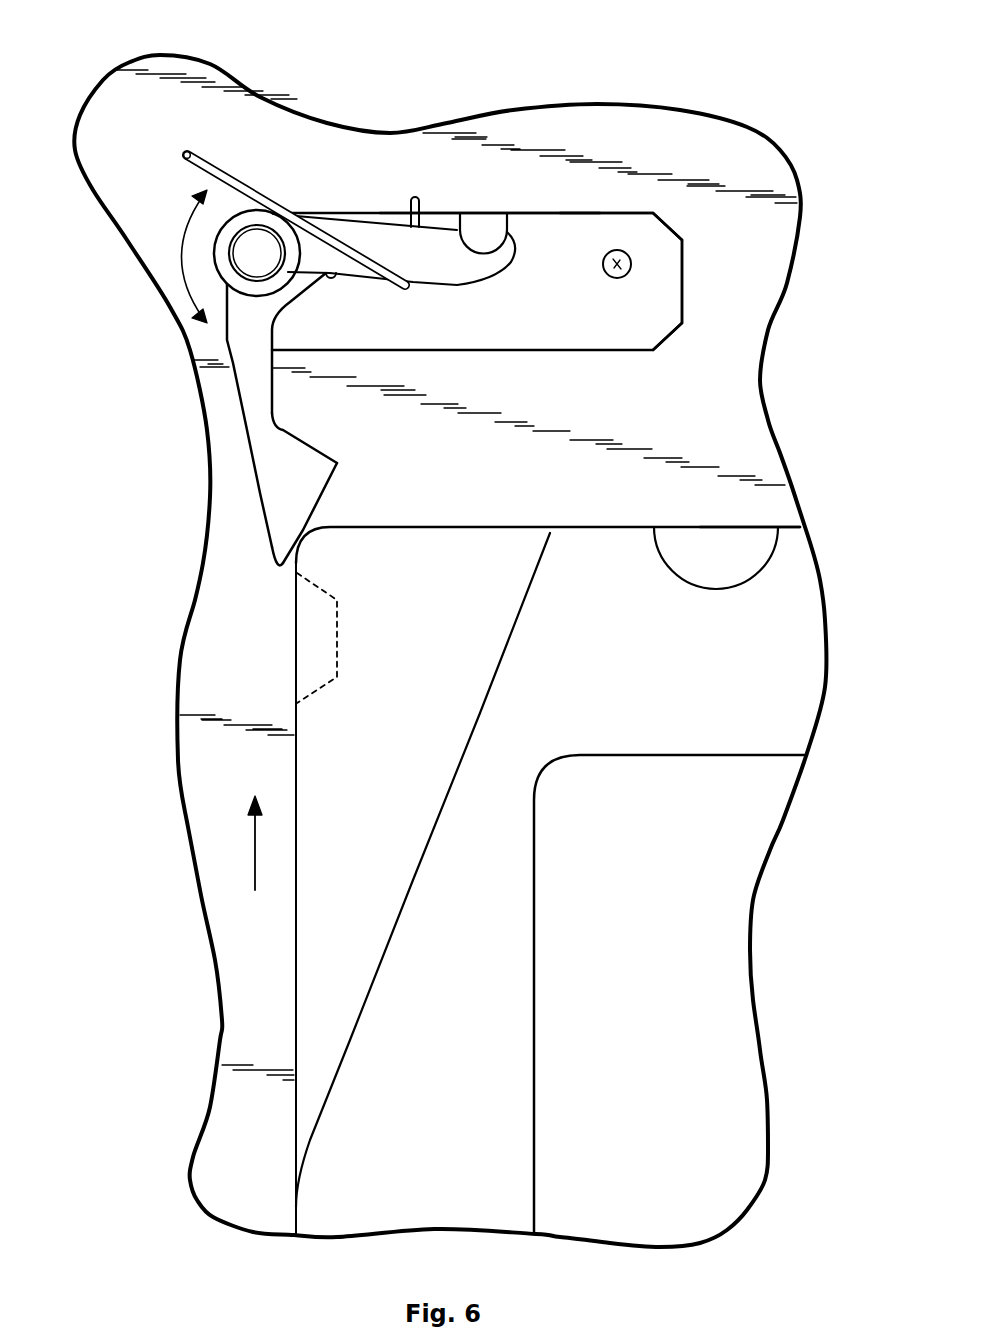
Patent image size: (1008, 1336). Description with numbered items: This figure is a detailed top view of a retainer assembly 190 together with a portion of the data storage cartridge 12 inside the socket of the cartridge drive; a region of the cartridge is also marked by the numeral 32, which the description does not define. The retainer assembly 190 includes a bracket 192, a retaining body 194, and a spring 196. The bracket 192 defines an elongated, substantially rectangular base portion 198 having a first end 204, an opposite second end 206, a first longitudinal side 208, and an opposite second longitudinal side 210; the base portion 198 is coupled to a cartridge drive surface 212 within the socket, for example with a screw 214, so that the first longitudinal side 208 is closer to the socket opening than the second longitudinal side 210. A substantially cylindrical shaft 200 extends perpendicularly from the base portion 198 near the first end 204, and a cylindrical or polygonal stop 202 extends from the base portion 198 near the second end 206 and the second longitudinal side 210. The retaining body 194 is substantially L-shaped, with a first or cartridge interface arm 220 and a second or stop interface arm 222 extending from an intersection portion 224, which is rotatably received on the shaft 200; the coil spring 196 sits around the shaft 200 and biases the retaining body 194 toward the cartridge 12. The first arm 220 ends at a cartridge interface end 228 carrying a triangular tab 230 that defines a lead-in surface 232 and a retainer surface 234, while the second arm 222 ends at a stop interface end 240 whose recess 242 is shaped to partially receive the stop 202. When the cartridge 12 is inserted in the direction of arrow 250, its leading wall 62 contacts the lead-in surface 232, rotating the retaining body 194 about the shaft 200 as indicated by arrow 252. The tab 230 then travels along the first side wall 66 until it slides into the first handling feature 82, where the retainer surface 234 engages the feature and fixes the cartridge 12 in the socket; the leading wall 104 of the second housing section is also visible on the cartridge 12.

The data storage cartridge 12 is at (725, 951).
The carriage 32 is at (757, 687).
The leading wall 62 is at (527, 527).
The first side wall 66 is at (297, 757).
The first handling feature 82 is at (317, 642).
The leading wall 104 is at (798, 525).
The retainer assembly 190 is at (268, 419).
The bracket 192 is at (643, 314).
The retaining body 194 is at (370, 247).
The spring 196 is at (252, 248).
The base portion 198 is at (663, 263).
The shaft 200 is at (246, 196).
The stop 202 is at (478, 230).
The first end 204 is at (285, 332).
The second end 206 is at (631, 256).
The first longitudinal side 208 is at (643, 352).
The second longitudinal side 210 is at (607, 213).
The cartridge drive surface 212 is at (728, 400).
The screw 214 is at (656, 214).
The first arm 220 is at (250, 353).
The second arm 222 is at (343, 237).
The intersection portion 224 is at (215, 296).
The cartridge interface end 228 is at (277, 527).
The triangular tab 230 is at (307, 478).
The lead-in surface 232 is at (323, 503).
The retainer surface 234 is at (307, 438).
The stop interface end 240 is at (487, 270).
The recess 242 is at (493, 232).
The arrow 250 is at (253, 853).
The arrow 252 is at (172, 242).